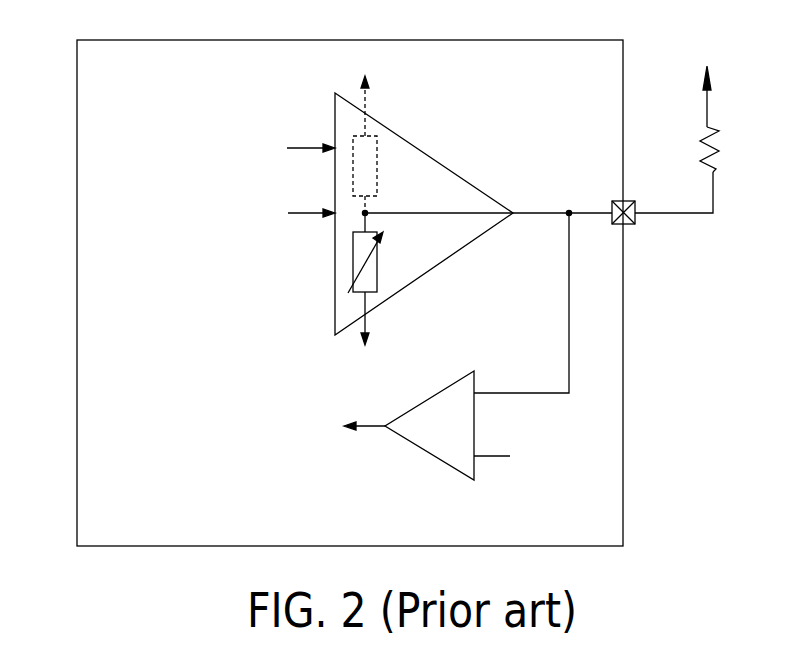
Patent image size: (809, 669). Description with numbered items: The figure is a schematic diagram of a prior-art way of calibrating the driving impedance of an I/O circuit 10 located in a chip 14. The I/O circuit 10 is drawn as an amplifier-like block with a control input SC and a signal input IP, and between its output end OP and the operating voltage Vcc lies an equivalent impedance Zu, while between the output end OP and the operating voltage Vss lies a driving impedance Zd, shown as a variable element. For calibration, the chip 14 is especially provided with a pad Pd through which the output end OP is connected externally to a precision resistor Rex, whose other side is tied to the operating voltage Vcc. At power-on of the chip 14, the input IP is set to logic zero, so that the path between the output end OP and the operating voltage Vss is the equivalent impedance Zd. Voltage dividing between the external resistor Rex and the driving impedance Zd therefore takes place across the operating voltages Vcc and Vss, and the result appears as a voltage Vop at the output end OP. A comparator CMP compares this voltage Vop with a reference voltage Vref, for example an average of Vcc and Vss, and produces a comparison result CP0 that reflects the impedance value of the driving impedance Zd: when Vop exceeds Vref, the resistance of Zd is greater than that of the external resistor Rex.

The chip 14 is at (382, 40).
The I/O circuit 10 is at (389, 212).
The equivalent impedance Zu is at (384, 174).
The driving impedance Zd is at (382, 253).
The operating voltage Vcc is at (389, 106).
The operating voltage Vss is at (389, 320).
The control signal input SC is at (289, 149).
The input IP is at (272, 215).
The output end OP is at (535, 233).
The voltage at the output end Vop is at (577, 197).
The pad Pd is at (625, 225).
The precision resistor Rex is at (703, 139).
The comparator CMP is at (477, 346).
The reference voltage Vref is at (521, 457).
The comparison result CP0 is at (333, 427).